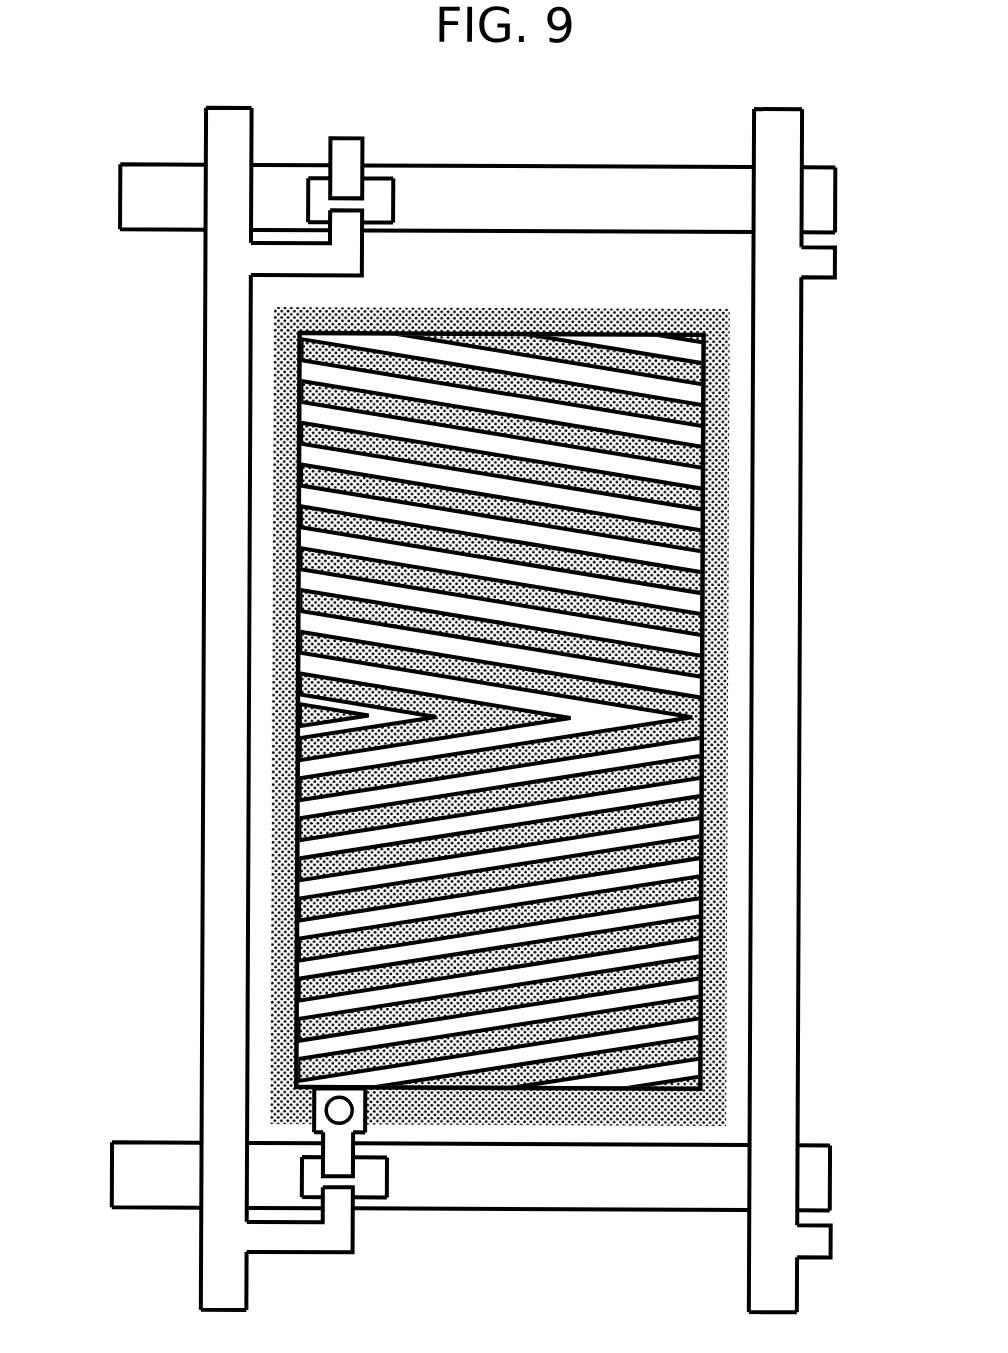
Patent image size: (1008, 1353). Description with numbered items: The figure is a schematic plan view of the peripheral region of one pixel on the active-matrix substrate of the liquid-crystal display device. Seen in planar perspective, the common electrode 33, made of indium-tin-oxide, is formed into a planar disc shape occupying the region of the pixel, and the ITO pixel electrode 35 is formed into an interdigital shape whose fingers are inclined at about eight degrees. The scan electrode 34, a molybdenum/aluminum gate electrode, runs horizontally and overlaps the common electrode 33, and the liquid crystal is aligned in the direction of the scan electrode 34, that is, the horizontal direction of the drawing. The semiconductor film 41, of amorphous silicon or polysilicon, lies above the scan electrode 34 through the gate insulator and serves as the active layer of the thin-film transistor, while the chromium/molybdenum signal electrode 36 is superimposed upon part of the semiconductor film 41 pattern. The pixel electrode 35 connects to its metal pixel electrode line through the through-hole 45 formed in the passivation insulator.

The common electrode 33 is at (575, 333).
The scan electrode 34 is at (127, 1180).
The pixel electrode 35 is at (655, 715).
The signal electrode 36 is at (216, 670).
The semiconductor film 41 is at (370, 1184).
The through-hole 45 is at (341, 1111).